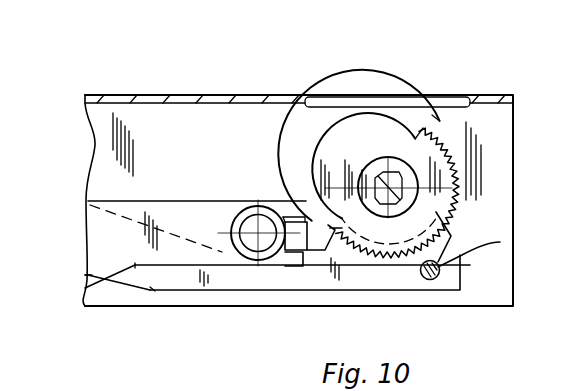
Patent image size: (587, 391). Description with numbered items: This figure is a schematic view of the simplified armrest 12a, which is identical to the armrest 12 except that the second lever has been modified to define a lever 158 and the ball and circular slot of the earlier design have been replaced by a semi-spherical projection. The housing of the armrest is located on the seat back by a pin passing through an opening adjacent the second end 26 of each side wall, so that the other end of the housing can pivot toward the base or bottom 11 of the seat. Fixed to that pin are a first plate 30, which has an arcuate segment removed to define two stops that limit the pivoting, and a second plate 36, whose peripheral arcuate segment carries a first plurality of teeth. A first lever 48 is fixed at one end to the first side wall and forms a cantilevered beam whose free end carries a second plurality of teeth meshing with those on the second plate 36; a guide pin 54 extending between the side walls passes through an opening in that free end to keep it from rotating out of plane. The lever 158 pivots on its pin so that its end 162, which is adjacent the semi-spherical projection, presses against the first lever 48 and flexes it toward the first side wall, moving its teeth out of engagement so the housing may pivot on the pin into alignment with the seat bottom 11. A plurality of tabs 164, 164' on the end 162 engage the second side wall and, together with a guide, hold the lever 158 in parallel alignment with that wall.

The armrest 12a is at (118, 83).
The armrest 12 is at (236, 332).
The base or bottom of seat 11 is at (55, 315).
The second end 26 is at (513, 158).
The first plate 30 is at (396, 112).
The second plate 36 is at (362, 150).
The first lever 48 is at (400, 282).
The guide pin 54 is at (500, 242).
The lever 158 is at (100, 226).
The end 162 is at (305, 263).
The tab 164 is at (263, 162).
The tab 164' is at (285, 294).